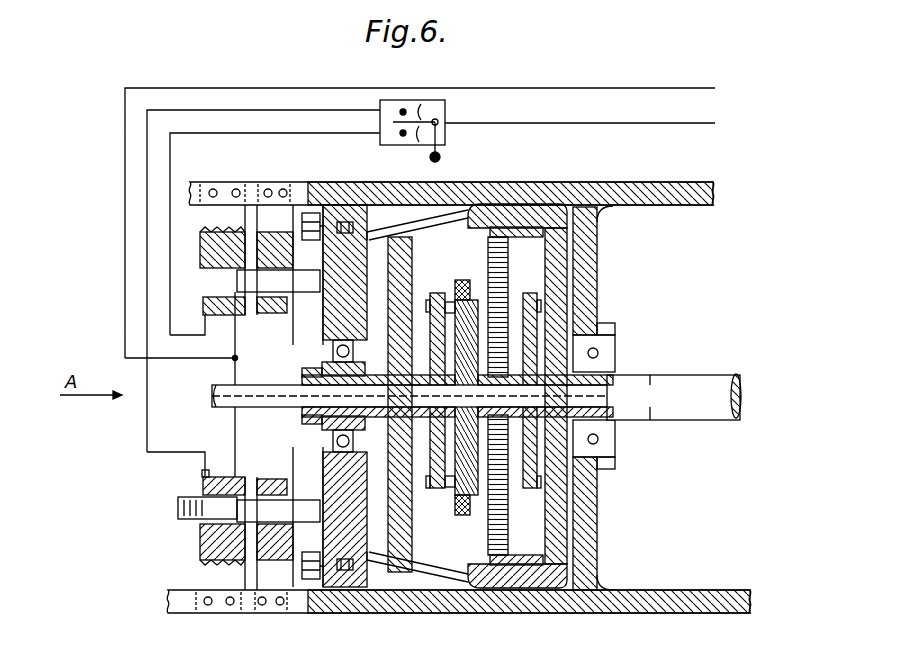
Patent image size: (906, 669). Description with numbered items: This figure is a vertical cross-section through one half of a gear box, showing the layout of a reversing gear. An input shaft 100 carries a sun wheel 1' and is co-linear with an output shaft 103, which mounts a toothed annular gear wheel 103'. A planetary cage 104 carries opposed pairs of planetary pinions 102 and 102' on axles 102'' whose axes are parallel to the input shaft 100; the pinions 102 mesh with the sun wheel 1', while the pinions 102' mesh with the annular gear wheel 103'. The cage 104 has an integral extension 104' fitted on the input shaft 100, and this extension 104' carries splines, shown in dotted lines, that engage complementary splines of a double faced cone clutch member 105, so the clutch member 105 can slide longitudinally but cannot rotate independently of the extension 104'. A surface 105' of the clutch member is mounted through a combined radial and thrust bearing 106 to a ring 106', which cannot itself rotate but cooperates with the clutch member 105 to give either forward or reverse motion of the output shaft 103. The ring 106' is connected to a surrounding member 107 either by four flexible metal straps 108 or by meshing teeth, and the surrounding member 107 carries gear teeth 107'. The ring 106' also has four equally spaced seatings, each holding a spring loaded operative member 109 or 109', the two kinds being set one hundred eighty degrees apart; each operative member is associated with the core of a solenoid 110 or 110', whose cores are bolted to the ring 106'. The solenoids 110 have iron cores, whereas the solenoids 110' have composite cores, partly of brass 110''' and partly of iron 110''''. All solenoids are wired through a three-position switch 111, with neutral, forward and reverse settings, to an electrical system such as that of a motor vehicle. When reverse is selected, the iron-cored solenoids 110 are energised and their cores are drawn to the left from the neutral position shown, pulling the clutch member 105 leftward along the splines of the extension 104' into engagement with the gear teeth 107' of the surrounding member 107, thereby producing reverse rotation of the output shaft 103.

The sun wheel 1' is at (449, 415).
The input shaft 100 is at (217, 387).
The planetary pinions 102 is at (473, 349).
The planetary pinions 102' is at (521, 398).
The axles 102'' is at (540, 407).
The output shaft 103 is at (674, 376).
The toothed annular gear wheel 103' is at (600, 396).
The planetary cage 104 is at (535, 381).
The integral extension 104' is at (385, 403).
The double faced cone clutch member 105 is at (419, 441).
The surface of the cone clutch member 105' is at (292, 432).
The combined radial and thrust bearing 106 is at (301, 396).
The ring 106' is at (321, 427).
The surrounding member 107 is at (320, 409).
The gear teeth 107' is at (400, 368).
The flexible metal straps 108 is at (302, 250).
The spring loaded operative member 109 is at (279, 285).
The spring loaded operative member 109' is at (277, 504).
The solenoid 110 is at (162, 271).
The solenoid 110' is at (194, 482).
The brass part of core 110''' is at (189, 544).
The iron part of core 110'''' is at (210, 398).
The switch 111 is at (438, 144).